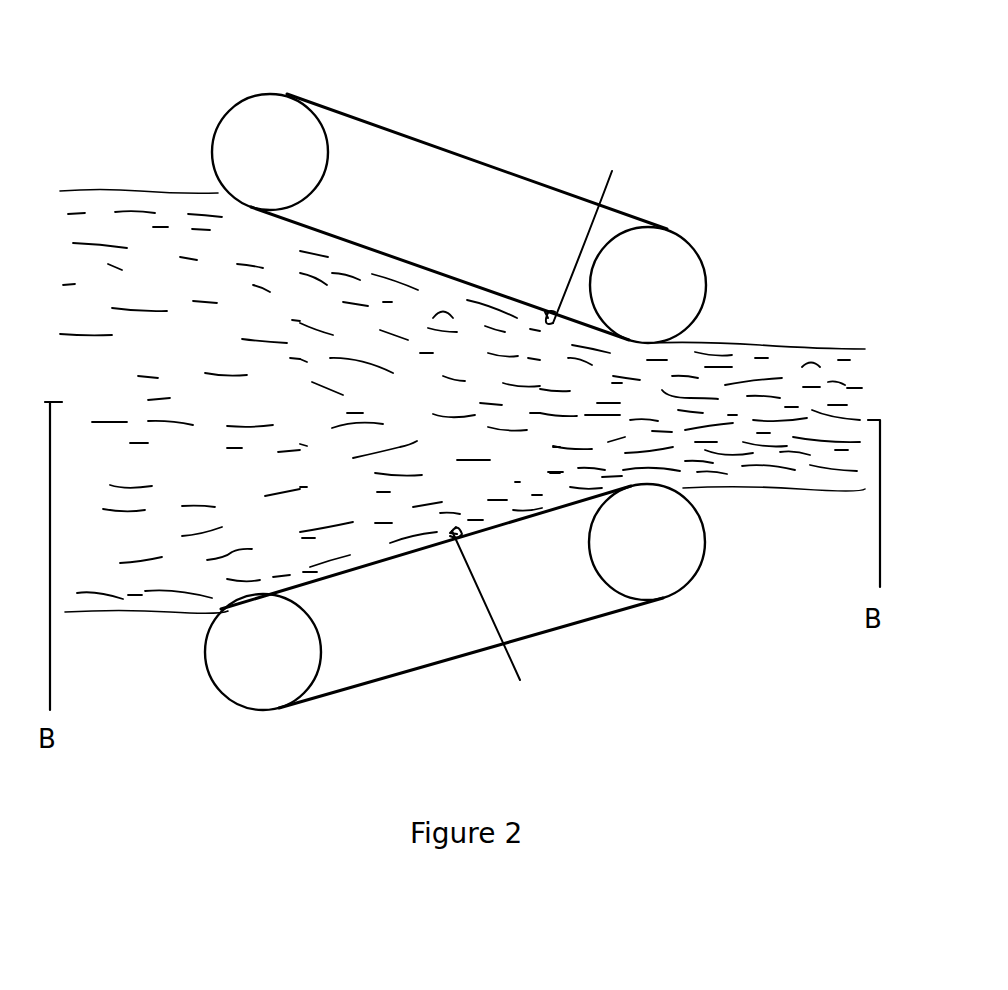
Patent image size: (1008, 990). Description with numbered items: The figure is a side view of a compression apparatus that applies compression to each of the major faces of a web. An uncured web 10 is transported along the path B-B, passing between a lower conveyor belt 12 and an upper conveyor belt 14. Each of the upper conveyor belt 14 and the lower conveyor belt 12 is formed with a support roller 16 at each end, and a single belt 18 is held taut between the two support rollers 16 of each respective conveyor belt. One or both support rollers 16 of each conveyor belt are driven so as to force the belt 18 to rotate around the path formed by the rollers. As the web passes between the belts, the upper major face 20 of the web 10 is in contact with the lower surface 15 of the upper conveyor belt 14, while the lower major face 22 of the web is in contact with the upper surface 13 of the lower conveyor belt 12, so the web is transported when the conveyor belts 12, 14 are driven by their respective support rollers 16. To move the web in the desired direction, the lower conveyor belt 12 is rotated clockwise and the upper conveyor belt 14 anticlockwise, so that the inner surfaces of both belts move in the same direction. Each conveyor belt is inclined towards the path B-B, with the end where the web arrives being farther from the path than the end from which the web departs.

The uncured web 10 is at (790, 365).
The lower conveyor belt 12 is at (272, 712).
The upper surface of the lower belt 13 is at (495, 618).
The upper conveyor belt 14 is at (678, 237).
The lower surface of the upper conveyor belt 15 is at (591, 235).
The support roller 16 is at (305, 133).
The belt 18 is at (450, 158).
The upper major face 20 is at (150, 190).
The lower major face 22 is at (130, 614).